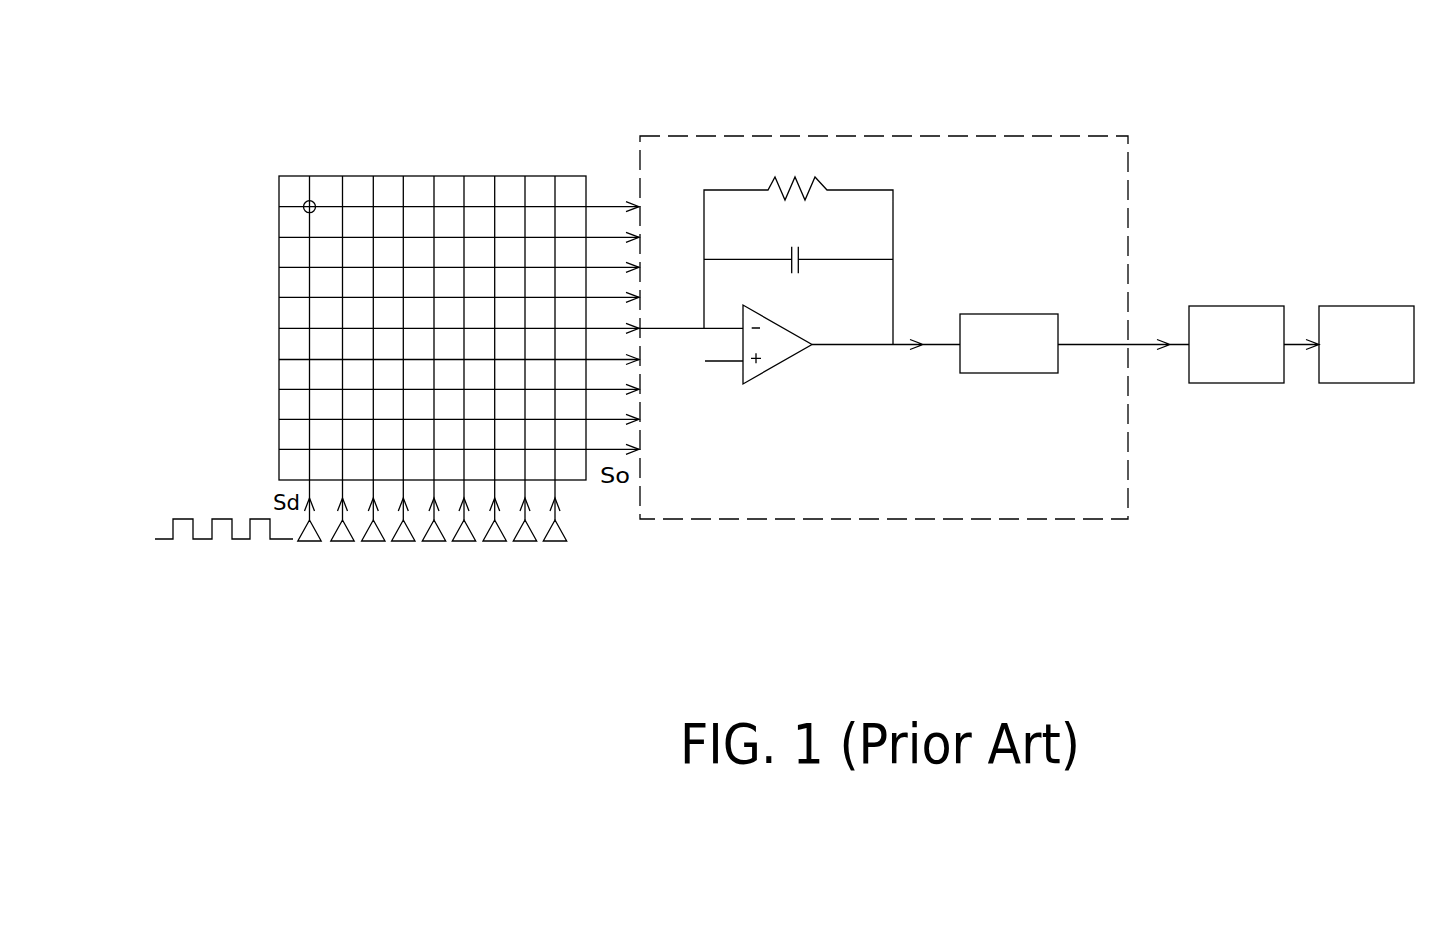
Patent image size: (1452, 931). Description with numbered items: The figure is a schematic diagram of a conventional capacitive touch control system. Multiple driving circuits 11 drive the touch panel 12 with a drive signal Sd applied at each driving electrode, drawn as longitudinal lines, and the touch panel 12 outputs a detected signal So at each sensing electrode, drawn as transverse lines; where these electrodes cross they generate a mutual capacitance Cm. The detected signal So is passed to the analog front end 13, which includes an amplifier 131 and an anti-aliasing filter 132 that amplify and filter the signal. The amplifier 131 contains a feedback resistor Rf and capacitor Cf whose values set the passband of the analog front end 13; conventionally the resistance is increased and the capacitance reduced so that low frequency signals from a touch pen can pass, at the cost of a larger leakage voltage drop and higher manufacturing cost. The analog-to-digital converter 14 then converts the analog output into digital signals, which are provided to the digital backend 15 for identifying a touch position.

The driving circuits 11 is at (372, 543).
The touch panel 12 is at (447, 175).
The analog front end 13 is at (915, 137).
The amplifier 131 is at (732, 182).
The anti-aliasing filter 132 is at (1018, 373).
The analog-to-digital converter 14 is at (1232, 306).
The digital backend 15 is at (1362, 306).
The mutual capacitance Cm is at (317, 200).